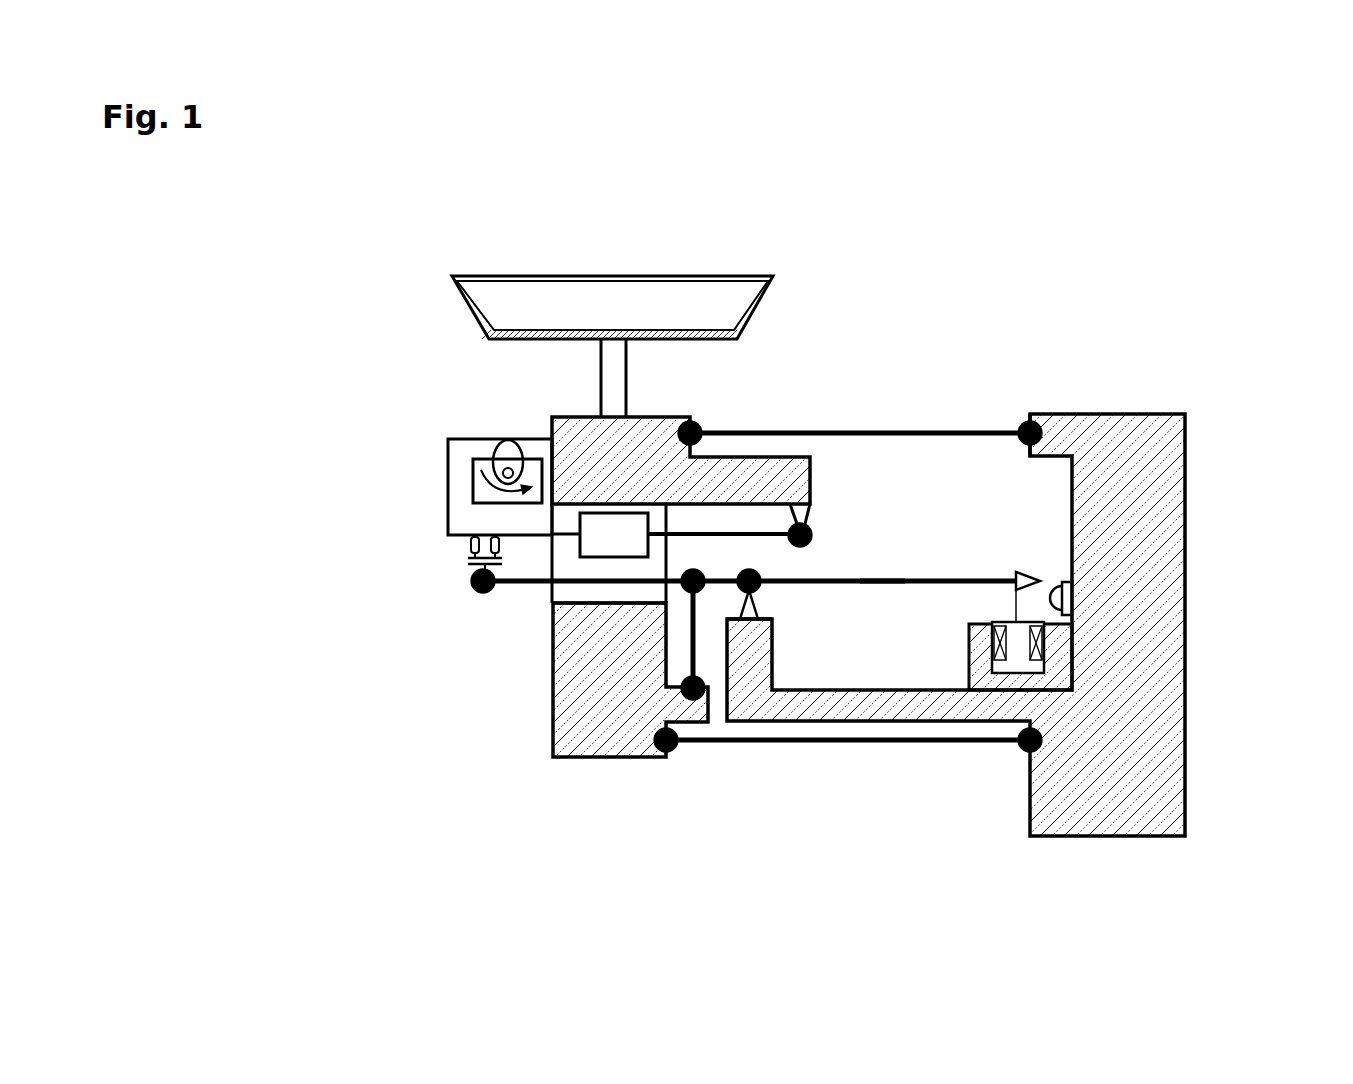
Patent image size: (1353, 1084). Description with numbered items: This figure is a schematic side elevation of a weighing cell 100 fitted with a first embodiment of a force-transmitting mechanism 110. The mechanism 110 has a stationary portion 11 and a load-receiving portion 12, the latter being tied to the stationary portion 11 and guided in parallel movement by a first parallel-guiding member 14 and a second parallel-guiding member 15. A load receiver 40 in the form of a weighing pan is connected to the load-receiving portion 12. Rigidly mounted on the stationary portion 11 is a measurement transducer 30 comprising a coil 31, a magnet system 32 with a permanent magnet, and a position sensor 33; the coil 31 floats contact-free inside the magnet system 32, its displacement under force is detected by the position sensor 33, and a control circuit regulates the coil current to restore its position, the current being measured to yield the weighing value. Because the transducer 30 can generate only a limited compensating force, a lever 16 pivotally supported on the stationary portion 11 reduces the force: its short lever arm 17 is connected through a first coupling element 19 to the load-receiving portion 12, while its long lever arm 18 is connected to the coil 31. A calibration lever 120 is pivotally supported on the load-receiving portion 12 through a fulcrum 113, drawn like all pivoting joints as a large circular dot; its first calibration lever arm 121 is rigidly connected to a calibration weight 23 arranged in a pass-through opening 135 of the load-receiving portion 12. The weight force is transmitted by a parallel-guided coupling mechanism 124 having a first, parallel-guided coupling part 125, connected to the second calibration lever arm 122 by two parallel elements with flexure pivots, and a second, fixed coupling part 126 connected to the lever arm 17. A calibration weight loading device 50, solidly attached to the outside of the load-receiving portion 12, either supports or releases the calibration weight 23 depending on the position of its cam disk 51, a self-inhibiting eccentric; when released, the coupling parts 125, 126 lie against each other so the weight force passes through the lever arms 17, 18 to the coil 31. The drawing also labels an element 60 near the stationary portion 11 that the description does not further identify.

The weighing cell 100 is at (1166, 338).
The force-transmitting mechanism 110 is at (590, 807).
The stationary portion 11 is at (1090, 791).
The load-receiving portion 12 is at (576, 733).
The first parallel-guiding member 14 is at (893, 431).
The second parallel-guiding member 15 is at (833, 743).
The lever 16 is at (908, 553).
The short lever arm 17 is at (718, 585).
The long lever arm 18 is at (882, 585).
The first coupling element 19 is at (690, 643).
The calibration weight 23 is at (600, 546).
The measurement transducer 30 is at (1096, 656).
The coil 31 is at (1048, 659).
The magnet system 32 is at (1051, 647).
The position sensor 33 is at (1164, 554).
The load receiver 40 is at (598, 311).
The calibration weight loading device 50 is at (460, 479).
The cam disk 51 is at (508, 458).
The housing corner 60 is at (1032, 414).
The fulcrum 113 is at (847, 391).
The calibration lever 120 is at (742, 518).
The first calibration lever arm 121 is at (703, 532).
The second calibration lever arm 122 is at (439, 571).
The parallel-guided coupling mechanism 124 is at (446, 557).
The first, parallel-guided coupling part 125 is at (470, 548).
The second, fixed coupling part 126 is at (470, 562).
The pass-through opening 135 is at (597, 592).